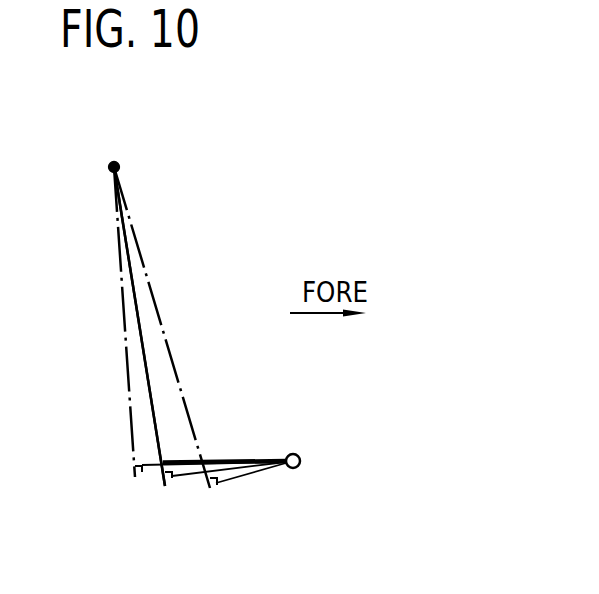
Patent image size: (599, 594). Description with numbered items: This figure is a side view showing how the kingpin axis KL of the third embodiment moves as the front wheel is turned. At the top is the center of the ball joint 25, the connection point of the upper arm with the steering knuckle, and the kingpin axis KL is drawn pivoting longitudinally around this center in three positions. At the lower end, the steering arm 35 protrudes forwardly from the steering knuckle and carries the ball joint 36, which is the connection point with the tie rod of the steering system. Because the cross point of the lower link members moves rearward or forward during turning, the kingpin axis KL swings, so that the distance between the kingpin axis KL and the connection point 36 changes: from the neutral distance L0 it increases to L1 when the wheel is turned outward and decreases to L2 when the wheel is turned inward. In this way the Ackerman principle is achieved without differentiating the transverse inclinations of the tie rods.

The ball joint 25 is at (119, 165).
The steering arm 35 is at (233, 460).
The ball joint 36 is at (300, 459).
The kingpin axis KL is at (134, 290).
The distance between kingpin axis and connection point in neutral position L0 is at (190, 478).
The distance between kingpin axis and connection point at outward turn L1 is at (146, 477).
The distance between kingpin axis and connection point at inward turn L2 is at (246, 477).